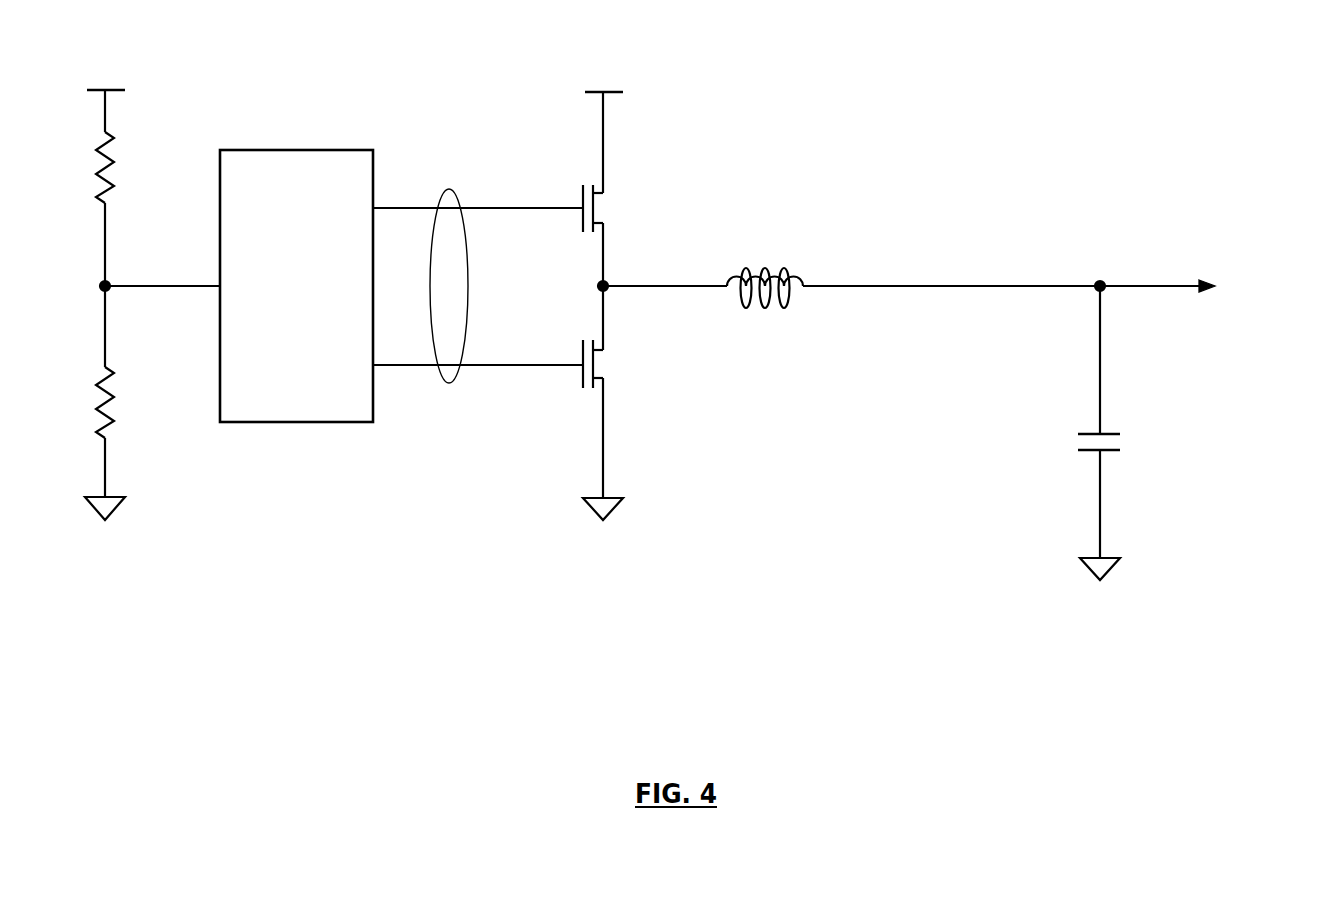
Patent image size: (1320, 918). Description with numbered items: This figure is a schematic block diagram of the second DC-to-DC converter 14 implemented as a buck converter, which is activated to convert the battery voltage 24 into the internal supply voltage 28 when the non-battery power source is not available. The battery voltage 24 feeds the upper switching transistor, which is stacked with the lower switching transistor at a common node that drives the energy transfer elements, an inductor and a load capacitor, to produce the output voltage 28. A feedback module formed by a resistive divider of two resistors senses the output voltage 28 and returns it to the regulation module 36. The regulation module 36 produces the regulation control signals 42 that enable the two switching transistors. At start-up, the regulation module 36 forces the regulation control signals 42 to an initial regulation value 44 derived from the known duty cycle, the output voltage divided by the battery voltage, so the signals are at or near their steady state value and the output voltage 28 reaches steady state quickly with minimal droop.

The second DC-to-DC converter 14 is at (679, 438).
The battery voltage 24 is at (602, 126).
The internal supply voltage 28 is at (679, 182).
The regulation module 36 is at (296, 286).
The regulation control signals 42 is at (419, 200).
The initial regulation value 44 is at (447, 188).